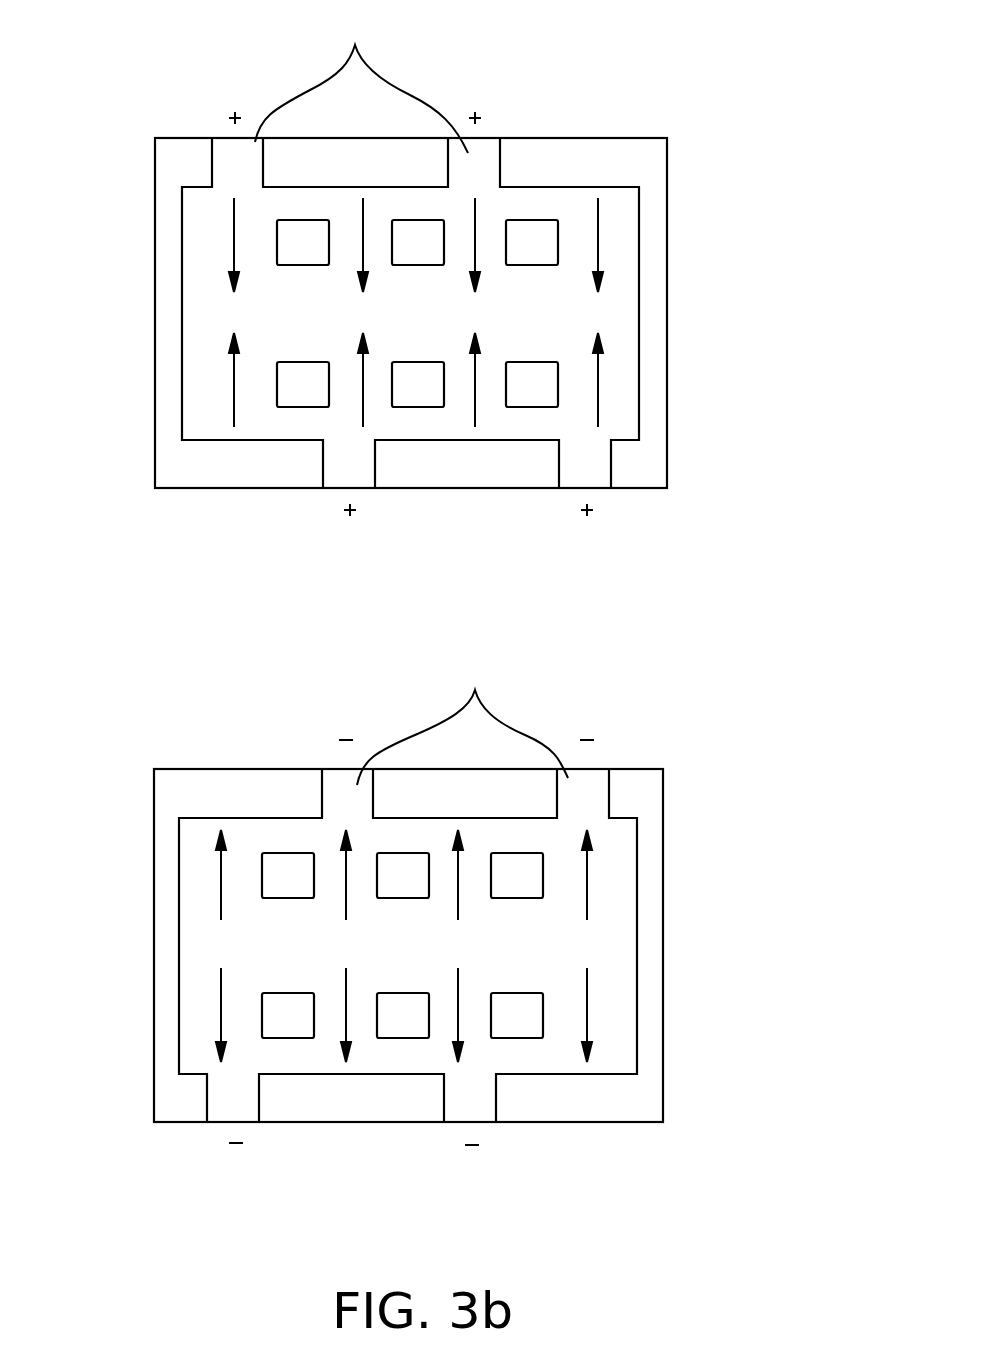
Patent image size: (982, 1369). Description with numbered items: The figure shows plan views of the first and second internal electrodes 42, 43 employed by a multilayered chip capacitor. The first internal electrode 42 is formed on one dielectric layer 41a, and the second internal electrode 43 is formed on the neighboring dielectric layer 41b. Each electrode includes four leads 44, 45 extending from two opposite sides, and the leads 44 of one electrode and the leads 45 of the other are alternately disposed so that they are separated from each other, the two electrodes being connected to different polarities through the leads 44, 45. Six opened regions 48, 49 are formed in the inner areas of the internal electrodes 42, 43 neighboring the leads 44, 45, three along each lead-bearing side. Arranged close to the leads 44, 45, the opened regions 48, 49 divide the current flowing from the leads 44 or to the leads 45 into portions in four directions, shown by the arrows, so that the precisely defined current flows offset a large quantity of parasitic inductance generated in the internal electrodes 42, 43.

The dielectric layer 41a is at (667, 313).
The dielectric layer 41b is at (650, 936).
The first internal electrode 42 is at (192, 318).
The second internal electrode 43 is at (190, 950).
The leads 44 is at (361, 81).
The leads 45 is at (462, 719).
The opened regions 48 is at (283, 240).
The opened regions 49 is at (265, 875).